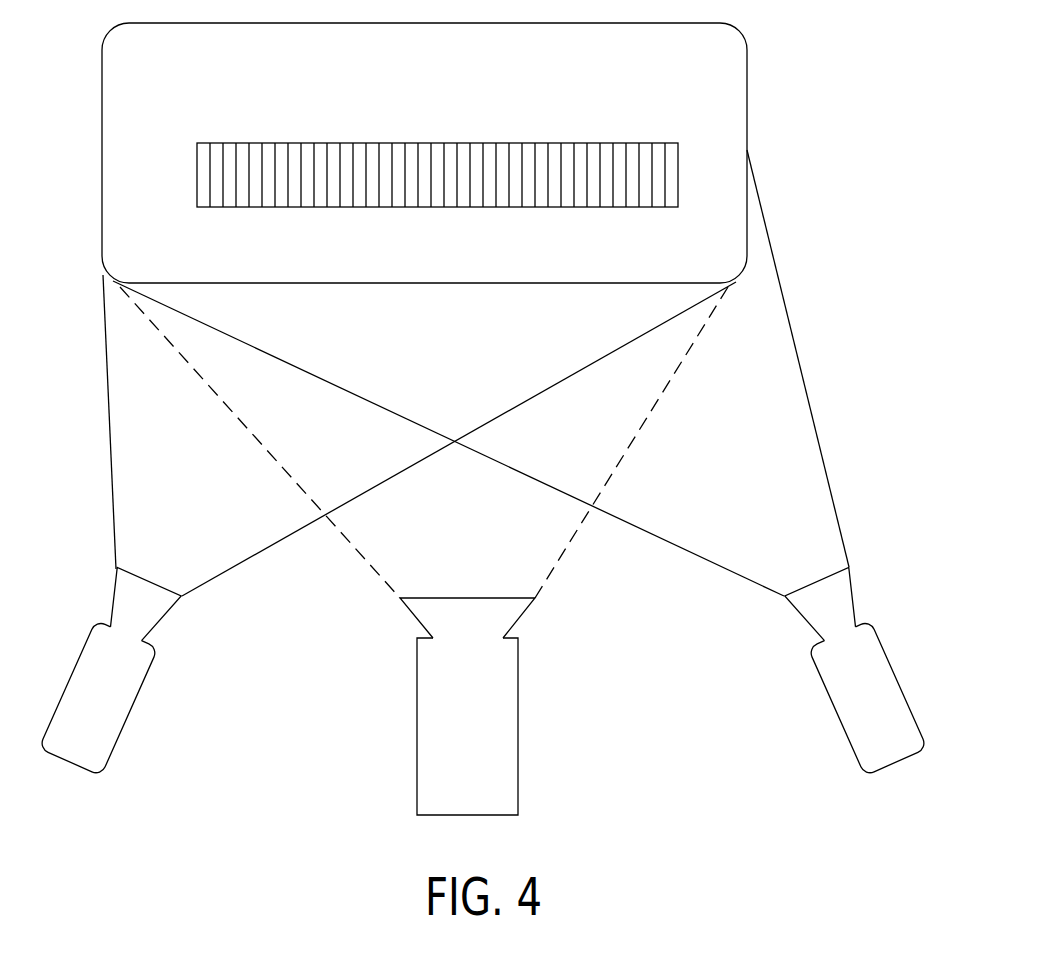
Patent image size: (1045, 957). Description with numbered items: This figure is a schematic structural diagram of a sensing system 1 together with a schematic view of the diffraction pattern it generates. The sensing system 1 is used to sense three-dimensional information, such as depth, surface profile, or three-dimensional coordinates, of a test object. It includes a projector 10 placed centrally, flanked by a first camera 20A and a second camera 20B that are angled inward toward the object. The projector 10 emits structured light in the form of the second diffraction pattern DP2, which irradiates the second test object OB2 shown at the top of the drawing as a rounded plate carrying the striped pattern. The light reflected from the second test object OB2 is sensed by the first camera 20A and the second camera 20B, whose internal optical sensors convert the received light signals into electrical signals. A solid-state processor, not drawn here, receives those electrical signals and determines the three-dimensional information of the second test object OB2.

The sensing system 1 is at (890, 250).
The projector 10 is at (506, 726).
The first camera 20A is at (844, 713).
The second camera 20B is at (123, 713).
The second test object OB2 is at (737, 77).
The second diffraction pattern DP2 is at (245, 129).